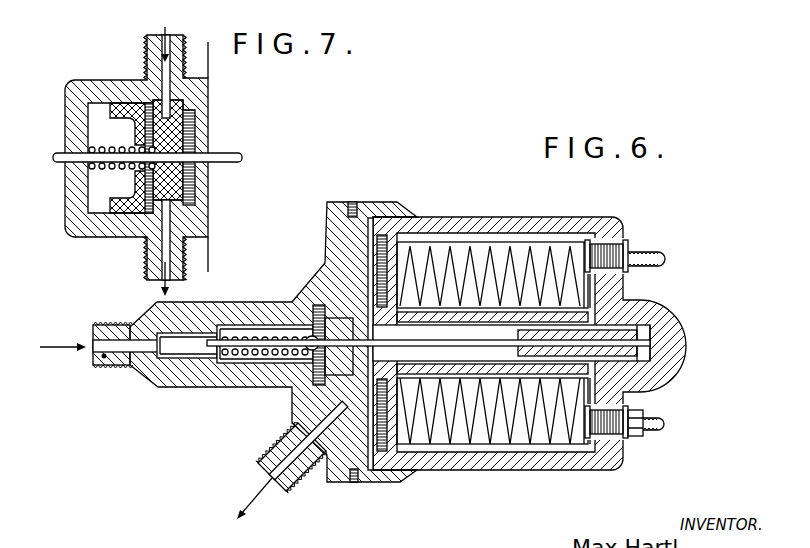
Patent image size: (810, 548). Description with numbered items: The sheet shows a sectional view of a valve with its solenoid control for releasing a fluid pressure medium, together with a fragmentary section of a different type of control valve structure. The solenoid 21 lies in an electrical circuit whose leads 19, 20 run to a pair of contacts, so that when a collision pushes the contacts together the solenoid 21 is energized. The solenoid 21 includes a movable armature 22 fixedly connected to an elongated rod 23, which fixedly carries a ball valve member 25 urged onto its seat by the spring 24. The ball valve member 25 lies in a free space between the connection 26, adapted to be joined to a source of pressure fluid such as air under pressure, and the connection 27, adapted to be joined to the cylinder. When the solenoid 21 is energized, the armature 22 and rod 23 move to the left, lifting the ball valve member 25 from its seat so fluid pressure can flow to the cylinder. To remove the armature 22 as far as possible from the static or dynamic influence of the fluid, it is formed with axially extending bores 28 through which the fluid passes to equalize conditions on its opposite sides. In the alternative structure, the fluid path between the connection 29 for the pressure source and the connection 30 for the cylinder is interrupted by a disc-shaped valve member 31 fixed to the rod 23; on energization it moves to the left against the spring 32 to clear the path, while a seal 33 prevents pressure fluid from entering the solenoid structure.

In FIG. 6, the lead 19 is at (640, 246).
In FIG. 6, the lead 20 is at (640, 438).
In FIG. 6, the solenoid 21 is at (458, 437).
In FIG. 6, the movable armature 22 is at (640, 344).
In FIG. 7, the elongated rod 23 is at (220, 157).
In FIG. 6, the elongated rod 23 is at (463, 340).
In FIG. 6, the spring 24 is at (227, 355).
In FIG. 6, the ball valve member 25 is at (309, 351).
In FIG. 6, the connection 26 is at (113, 359).
In FIG. 6, the connection 27 is at (284, 488).
In FIG. 6, the axially extending bores 28 is at (557, 343).
In FIG. 7, the connection 29 is at (154, 52).
In FIG. 7, the connection 30 is at (151, 268).
In FIG. 7, the disc-shaped valve member 31 is at (173, 184).
In FIG. 7, the spring 32 is at (100, 146).
In FIG. 7, the seal 33 is at (188, 125).